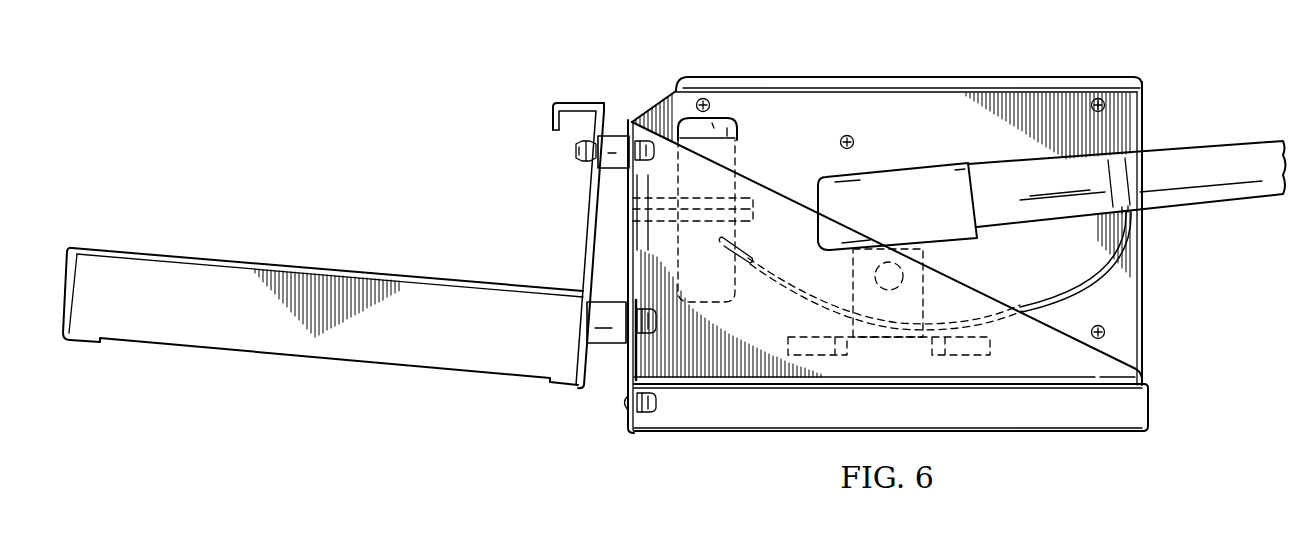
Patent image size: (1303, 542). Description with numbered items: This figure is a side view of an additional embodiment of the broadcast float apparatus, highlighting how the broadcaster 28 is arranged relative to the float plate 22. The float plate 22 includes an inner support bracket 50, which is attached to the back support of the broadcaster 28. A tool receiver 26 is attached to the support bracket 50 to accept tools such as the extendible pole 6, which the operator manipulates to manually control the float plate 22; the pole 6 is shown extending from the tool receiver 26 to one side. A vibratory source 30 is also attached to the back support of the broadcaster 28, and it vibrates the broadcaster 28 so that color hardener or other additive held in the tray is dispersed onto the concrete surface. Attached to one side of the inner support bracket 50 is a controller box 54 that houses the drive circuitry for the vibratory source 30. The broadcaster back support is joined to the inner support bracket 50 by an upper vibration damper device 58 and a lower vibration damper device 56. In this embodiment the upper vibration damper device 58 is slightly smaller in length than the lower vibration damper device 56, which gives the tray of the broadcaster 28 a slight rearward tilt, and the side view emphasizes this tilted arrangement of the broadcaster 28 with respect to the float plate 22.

The extendible pole 6 is at (1203, 149).
The float plate 22 is at (724, 434).
The tool receiver 26 is at (900, 172).
The broadcaster 28 is at (282, 221).
The vibratory source 30 is at (737, 151).
The inner support bracket 50 is at (1047, 367).
The controller box 54 is at (903, 76).
The lower vibration damper device 56 is at (598, 346).
The upper vibration damper device 58 is at (612, 134).